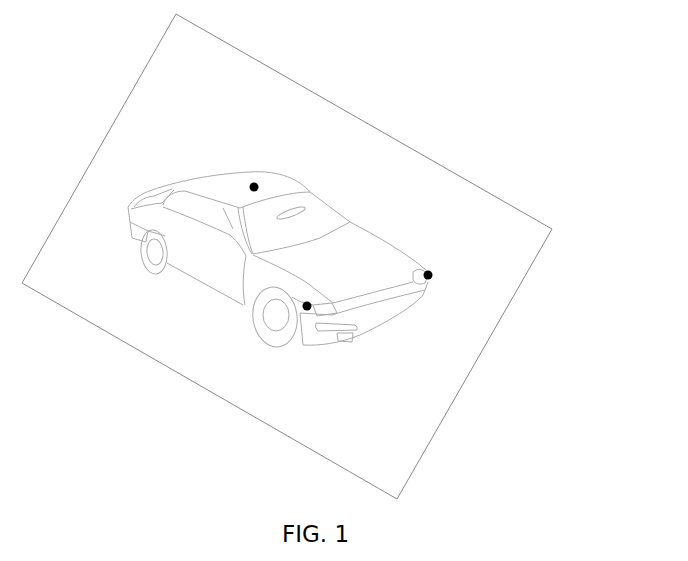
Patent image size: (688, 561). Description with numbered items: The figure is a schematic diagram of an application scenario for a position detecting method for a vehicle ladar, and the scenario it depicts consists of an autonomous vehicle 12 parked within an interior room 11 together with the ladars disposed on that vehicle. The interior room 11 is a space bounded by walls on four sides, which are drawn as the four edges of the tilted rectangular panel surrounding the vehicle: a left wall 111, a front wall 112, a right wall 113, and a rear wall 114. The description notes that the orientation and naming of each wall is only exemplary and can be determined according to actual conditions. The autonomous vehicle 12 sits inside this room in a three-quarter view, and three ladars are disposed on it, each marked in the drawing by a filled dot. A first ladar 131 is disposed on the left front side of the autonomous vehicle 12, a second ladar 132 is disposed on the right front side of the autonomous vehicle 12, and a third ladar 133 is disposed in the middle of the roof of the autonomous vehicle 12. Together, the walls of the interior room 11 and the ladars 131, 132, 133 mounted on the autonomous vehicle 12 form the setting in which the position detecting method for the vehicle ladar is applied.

The interior room 11 is at (303, 256).
The left wall 111 is at (477, 186).
The front wall 112 is at (475, 365).
The right wall 113 is at (208, 391).
The rear wall 114 is at (98, 146).
The autonomous vehicle 12 is at (369, 248).
The first ladar 131 is at (432, 273).
The second ladar 132 is at (305, 311).
The third ladar 133 is at (254, 182).